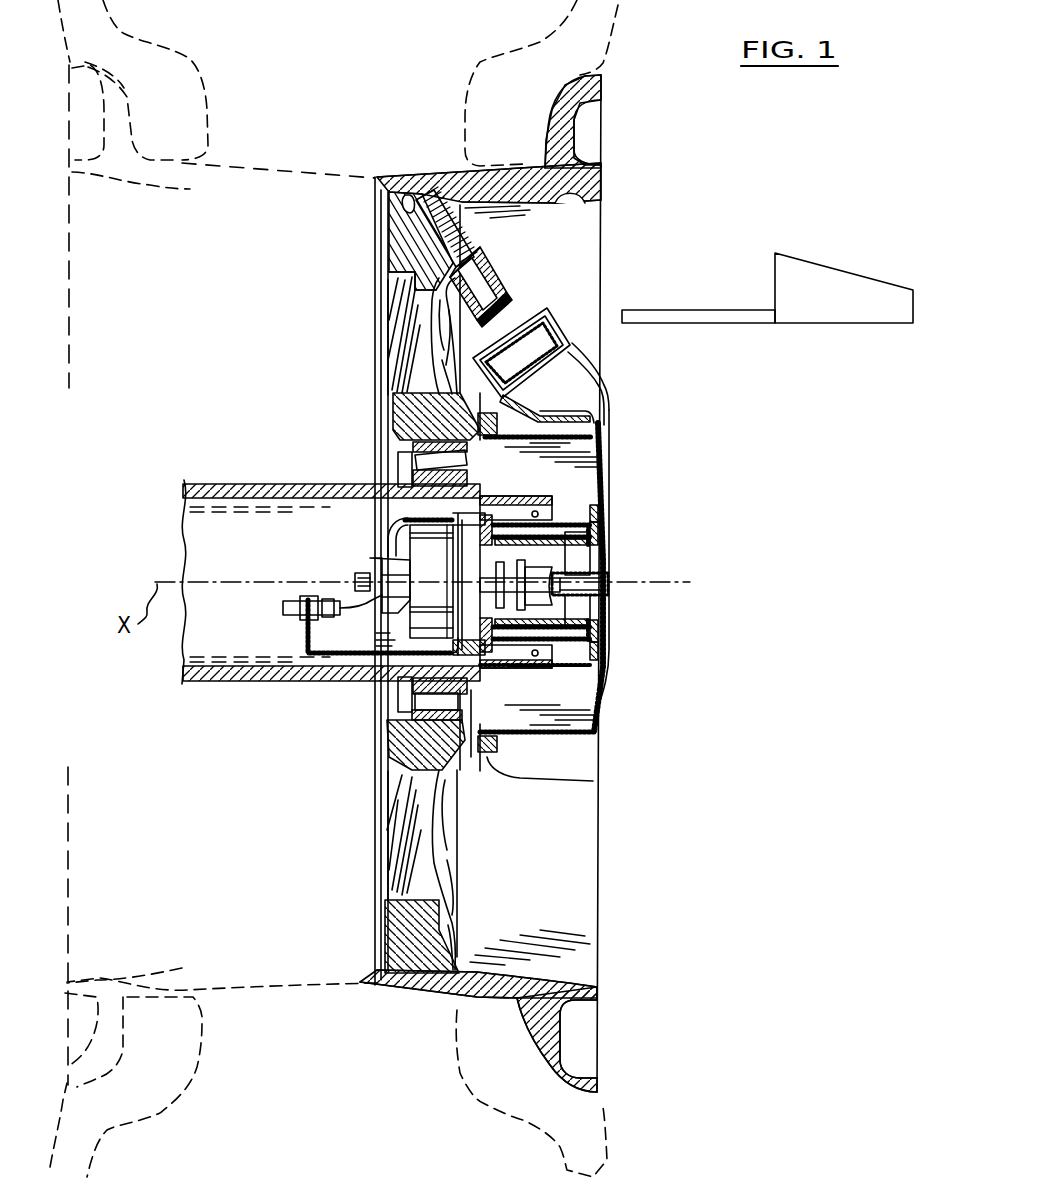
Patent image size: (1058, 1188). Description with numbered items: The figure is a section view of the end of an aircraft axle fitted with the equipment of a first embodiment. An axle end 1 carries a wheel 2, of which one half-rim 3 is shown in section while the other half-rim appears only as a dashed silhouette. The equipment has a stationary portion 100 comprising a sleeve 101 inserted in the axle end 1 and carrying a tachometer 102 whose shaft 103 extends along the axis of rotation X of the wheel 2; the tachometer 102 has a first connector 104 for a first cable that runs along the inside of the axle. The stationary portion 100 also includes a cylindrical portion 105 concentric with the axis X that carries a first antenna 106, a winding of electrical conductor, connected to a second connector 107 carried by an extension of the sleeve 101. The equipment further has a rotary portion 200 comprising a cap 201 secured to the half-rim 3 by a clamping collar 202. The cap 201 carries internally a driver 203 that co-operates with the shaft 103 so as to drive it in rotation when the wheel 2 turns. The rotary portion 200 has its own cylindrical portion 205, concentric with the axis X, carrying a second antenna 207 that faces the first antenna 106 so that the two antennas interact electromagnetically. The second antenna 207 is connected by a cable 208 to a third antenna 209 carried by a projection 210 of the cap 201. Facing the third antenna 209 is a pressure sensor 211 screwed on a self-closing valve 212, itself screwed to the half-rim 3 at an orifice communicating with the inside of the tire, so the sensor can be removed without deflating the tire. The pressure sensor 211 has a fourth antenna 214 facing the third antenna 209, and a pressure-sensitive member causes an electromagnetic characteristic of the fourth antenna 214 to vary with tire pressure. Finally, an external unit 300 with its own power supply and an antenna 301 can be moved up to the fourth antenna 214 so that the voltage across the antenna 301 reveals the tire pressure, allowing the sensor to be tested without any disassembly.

The axle end 1 is at (318, 490).
The wheel 2 is at (618, 259).
The half-rim 3 is at (543, 183).
The stationary portion 100 is at (364, 553).
The sleeve 101 is at (552, 509).
The tachometer 102 is at (388, 523).
The shaft 103 is at (540, 597).
The first connector 104 is at (357, 573).
The cylindrical portion 105 is at (540, 552).
The first antenna 106 is at (607, 538).
The second connector 107 is at (283, 607).
The rotary portion 200 is at (624, 480).
The cap 201 is at (600, 702).
The clamping collar 202 is at (593, 781).
The driver 203 is at (548, 578).
The cylindrical portion 205 is at (556, 650).
The second antenna 207 is at (562, 637).
The cable 208 is at (580, 414).
The third antenna 209 is at (568, 318).
The projection 210 is at (587, 356).
The pressure sensor 211 is at (498, 272).
The self-closing valve 212 is at (468, 229).
The fourth antenna 214 is at (512, 285).
The external unit 300 is at (846, 310).
The antenna 301 is at (737, 313).